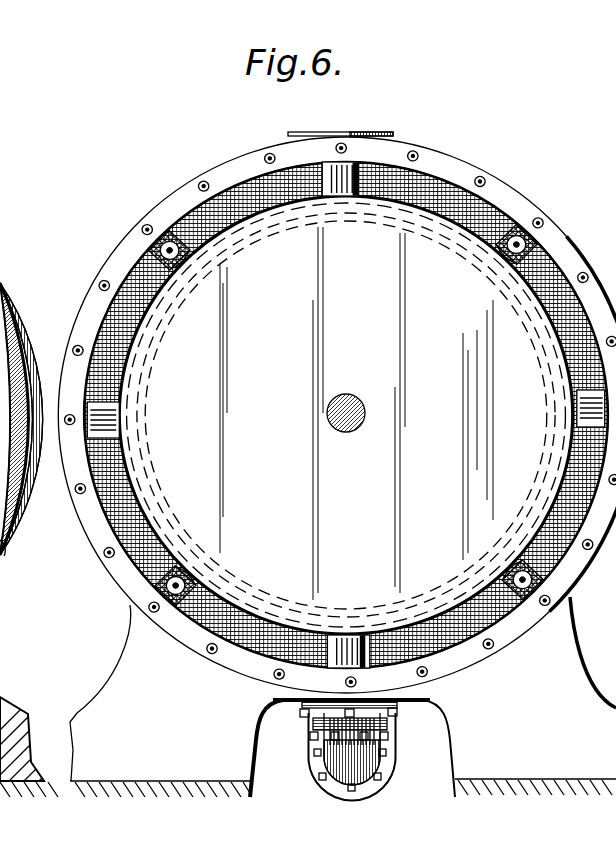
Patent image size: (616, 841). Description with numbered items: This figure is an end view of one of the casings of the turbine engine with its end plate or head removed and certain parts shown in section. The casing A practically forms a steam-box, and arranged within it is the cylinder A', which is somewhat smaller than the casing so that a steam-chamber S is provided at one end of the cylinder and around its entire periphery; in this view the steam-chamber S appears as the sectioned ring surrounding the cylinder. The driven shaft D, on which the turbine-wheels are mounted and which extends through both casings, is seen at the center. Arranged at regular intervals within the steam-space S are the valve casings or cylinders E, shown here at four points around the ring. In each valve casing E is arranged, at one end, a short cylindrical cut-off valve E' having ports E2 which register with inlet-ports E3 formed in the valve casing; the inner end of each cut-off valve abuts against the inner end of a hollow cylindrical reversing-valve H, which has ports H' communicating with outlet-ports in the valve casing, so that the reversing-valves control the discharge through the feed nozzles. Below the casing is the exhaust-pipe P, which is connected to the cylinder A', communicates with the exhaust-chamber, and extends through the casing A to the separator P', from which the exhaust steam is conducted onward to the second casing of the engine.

The casing A is at (308, 458).
The cylinder A' is at (282, 415).
The steam-chamber S is at (437, 195).
The valve casing or cylinder E is at (303, 397).
The cut-off valve E' is at (339, 444).
The ports E2 is at (180, 257).
The inlet-ports E3 is at (172, 245).
The shaft D is at (358, 426).
The exhaust-pipe P is at (360, 729).
The separator P' is at (365, 762).
The reversing-valve H is at (14, 560).
The port H' is at (30, 729).